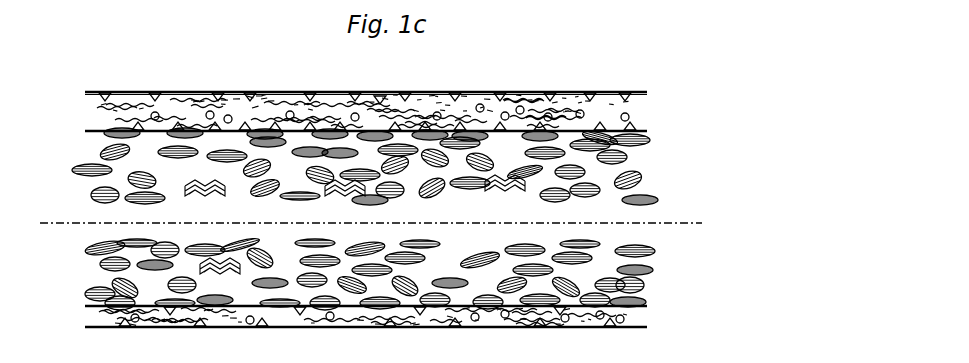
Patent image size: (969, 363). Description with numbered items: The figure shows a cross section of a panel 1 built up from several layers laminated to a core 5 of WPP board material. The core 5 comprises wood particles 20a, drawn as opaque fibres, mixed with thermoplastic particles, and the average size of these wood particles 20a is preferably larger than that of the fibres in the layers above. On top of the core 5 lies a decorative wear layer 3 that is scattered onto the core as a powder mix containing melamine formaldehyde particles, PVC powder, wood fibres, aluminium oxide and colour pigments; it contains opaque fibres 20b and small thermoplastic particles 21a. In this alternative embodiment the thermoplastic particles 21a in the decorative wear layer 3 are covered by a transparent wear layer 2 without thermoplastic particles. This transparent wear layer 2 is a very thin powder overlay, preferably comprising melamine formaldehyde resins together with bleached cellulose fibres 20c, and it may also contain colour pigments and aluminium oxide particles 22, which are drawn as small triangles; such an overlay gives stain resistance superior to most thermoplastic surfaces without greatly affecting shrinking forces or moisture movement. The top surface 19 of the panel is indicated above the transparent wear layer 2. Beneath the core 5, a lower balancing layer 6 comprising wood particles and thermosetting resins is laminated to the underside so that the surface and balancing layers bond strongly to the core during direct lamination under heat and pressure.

The panel 1 is at (117, 90).
The transparent wear layer 2 is at (80, 100).
The decorative wear layer 3 is at (82, 121).
The core 5 is at (82, 177).
The balancing layer 6 is at (84, 312).
The top surface 19 is at (294, 90).
The wood particles 20a is at (644, 152).
The fibres 20b is at (644, 128).
The bleached cellulose fibres 20c is at (644, 102).
The thermoplastic particles 21a is at (482, 104).
The aluminium oxide particles 22 is at (165, 100).